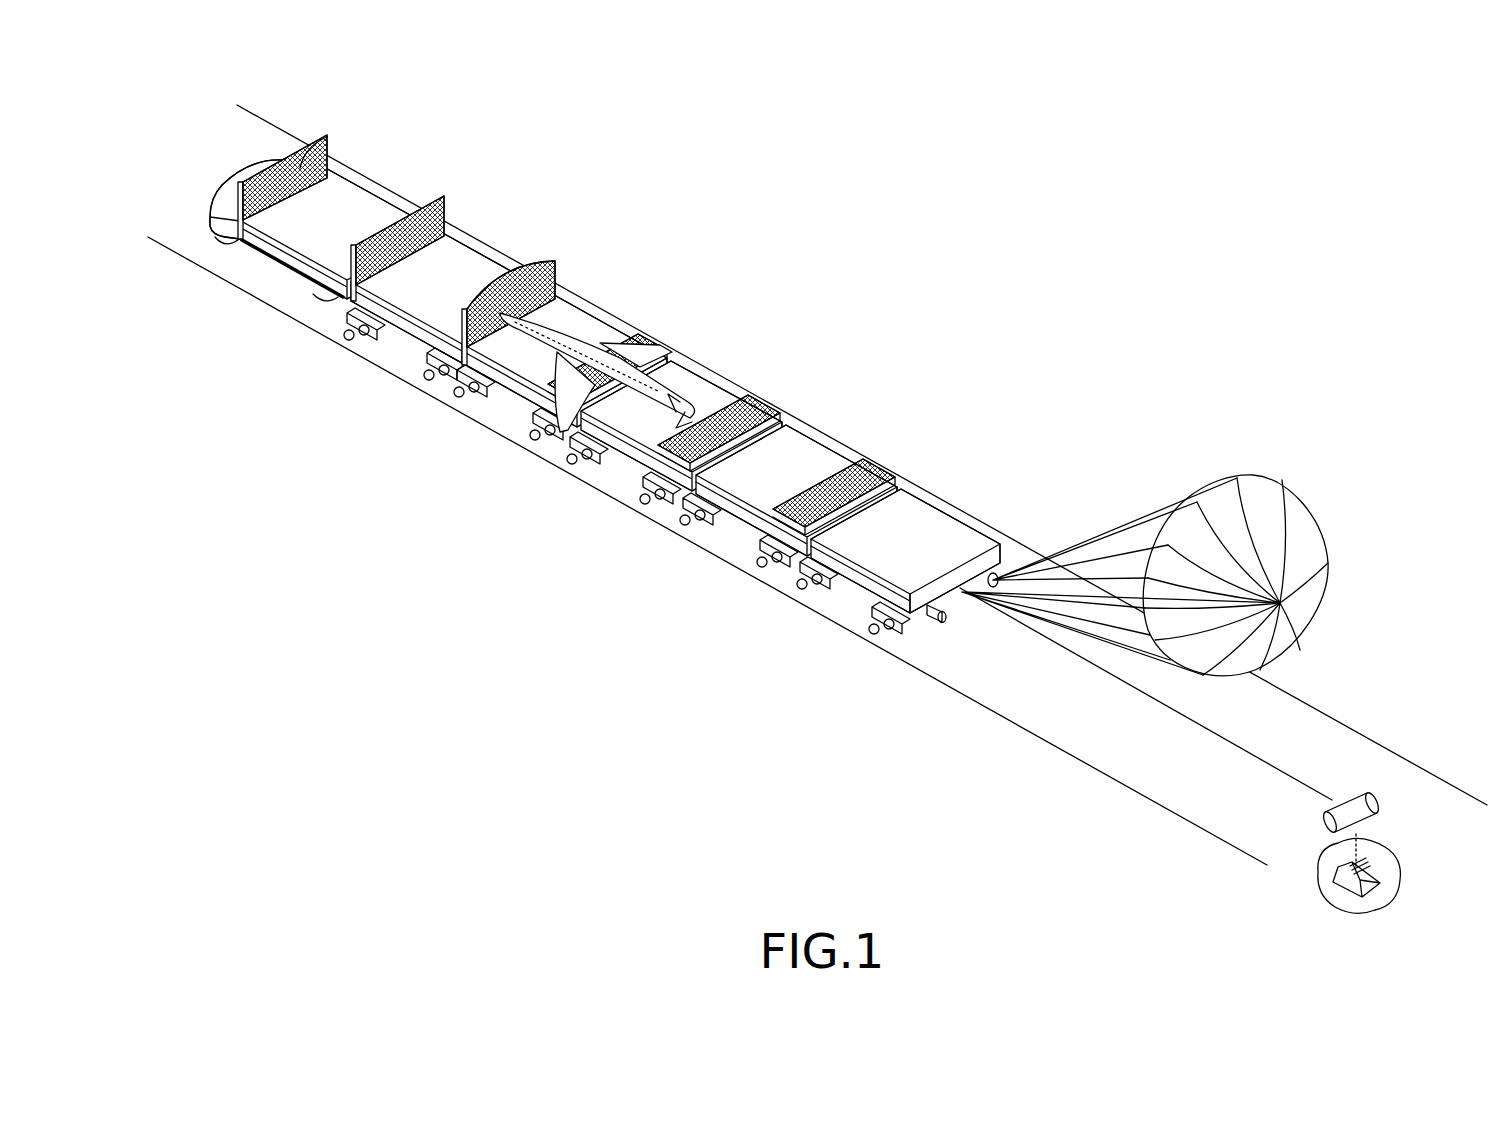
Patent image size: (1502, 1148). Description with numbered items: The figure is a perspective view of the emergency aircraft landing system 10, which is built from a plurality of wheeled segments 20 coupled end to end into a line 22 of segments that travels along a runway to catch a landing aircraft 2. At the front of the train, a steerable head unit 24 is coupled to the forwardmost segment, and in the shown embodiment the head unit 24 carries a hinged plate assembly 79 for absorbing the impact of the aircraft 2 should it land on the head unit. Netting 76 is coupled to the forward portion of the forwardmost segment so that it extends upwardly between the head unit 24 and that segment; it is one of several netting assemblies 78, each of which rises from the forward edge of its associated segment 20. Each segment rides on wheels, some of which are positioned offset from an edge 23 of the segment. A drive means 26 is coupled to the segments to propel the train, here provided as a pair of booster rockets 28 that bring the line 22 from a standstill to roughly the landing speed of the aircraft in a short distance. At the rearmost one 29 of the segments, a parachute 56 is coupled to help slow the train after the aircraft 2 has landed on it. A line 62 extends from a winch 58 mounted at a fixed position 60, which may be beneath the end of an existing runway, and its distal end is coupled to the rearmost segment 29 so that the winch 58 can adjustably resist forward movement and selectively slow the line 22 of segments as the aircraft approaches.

The landing aircraft 2 is at (637, 343).
The emergency aircraft landing system 10 is at (553, 522).
The wheeled segments 20 is at (808, 455).
The line of wheeled segments 22 is at (990, 613).
The edge of the segment 23 is at (317, 185).
The steerable head unit 24 is at (232, 197).
The drive means 26 is at (958, 627).
The booster rockets 28 is at (935, 618).
The rearmost one of the segments 29 is at (970, 518).
The parachute 56 is at (1282, 513).
The winch 58 is at (1345, 885).
The fixed position 60 is at (1368, 888).
The line 62 is at (1255, 752).
The netting 76 is at (297, 170).
The netting assemblies 78 is at (548, 277).
The hinged plate assembly 79 is at (310, 240).